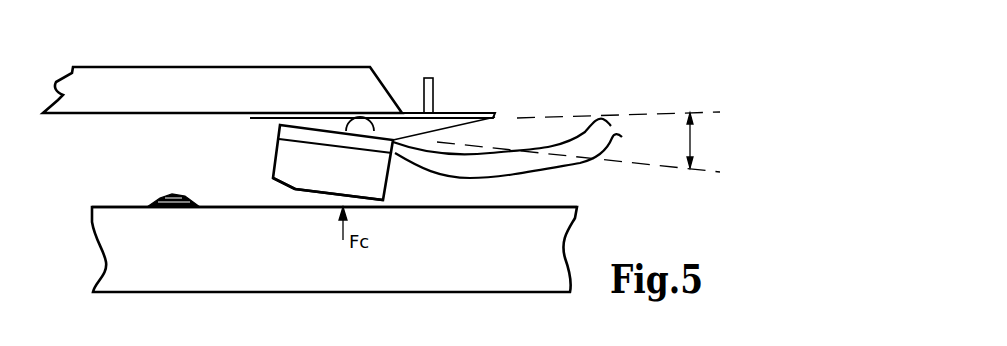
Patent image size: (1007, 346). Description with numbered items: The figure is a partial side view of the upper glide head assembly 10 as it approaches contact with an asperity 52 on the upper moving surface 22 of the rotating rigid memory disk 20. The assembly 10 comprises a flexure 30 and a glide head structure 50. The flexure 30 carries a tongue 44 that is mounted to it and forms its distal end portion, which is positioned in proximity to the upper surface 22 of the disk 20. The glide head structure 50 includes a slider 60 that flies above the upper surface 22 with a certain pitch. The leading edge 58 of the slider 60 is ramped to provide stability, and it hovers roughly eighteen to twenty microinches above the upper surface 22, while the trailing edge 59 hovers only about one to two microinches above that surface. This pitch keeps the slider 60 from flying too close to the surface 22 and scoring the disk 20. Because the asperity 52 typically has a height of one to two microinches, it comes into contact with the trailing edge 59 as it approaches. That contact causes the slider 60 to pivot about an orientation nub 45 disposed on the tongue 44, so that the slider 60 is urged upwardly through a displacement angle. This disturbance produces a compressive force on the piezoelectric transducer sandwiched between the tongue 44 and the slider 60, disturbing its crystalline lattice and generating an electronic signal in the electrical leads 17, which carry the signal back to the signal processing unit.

The upper glide head assembly 10 is at (248, 40).
The flexure 30 is at (148, 80).
The tongue 44 is at (472, 113).
The orientation nub 45 is at (361, 121).
The glide head structure 50 is at (520, 100).
The electrical leads 17 is at (567, 172).
The slider 60 is at (287, 160).
The leading edge 58 is at (288, 188).
The trailing edge 59 is at (377, 207).
The rigid memory disk 20 is at (145, 273).
The upper moving surface 22 is at (117, 205).
The asperity 52 is at (187, 200).